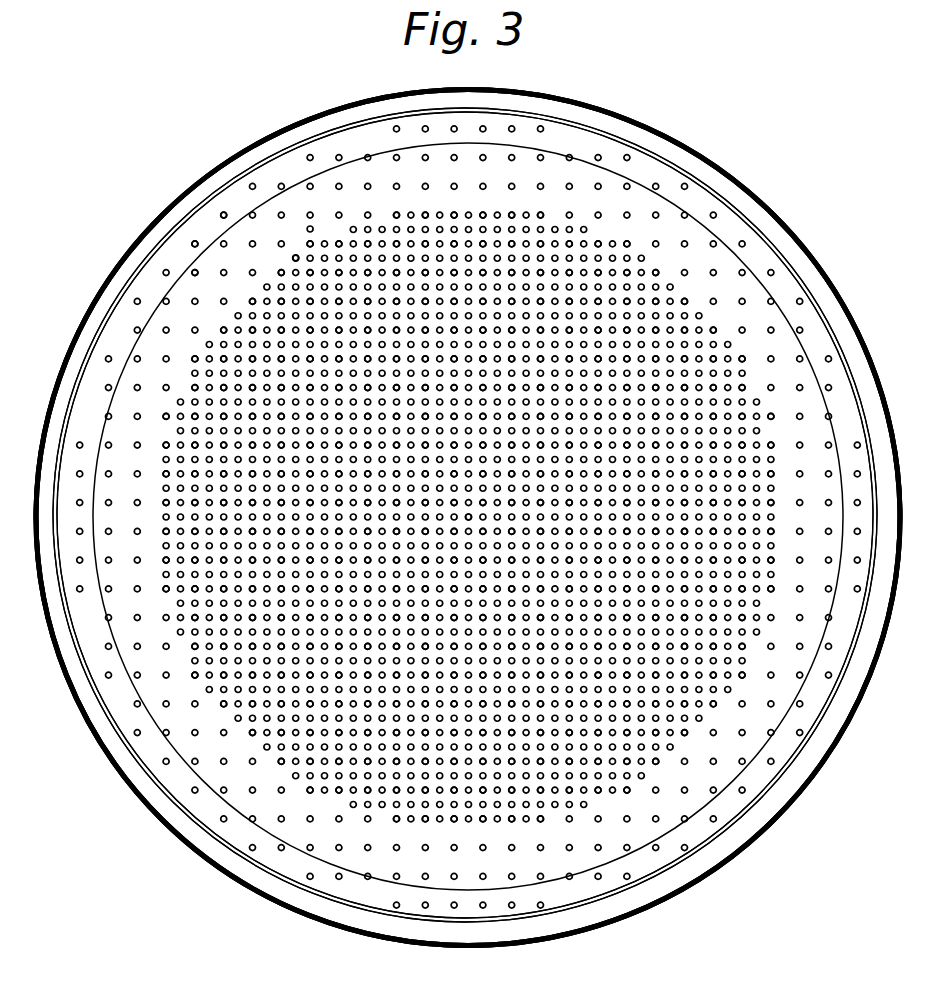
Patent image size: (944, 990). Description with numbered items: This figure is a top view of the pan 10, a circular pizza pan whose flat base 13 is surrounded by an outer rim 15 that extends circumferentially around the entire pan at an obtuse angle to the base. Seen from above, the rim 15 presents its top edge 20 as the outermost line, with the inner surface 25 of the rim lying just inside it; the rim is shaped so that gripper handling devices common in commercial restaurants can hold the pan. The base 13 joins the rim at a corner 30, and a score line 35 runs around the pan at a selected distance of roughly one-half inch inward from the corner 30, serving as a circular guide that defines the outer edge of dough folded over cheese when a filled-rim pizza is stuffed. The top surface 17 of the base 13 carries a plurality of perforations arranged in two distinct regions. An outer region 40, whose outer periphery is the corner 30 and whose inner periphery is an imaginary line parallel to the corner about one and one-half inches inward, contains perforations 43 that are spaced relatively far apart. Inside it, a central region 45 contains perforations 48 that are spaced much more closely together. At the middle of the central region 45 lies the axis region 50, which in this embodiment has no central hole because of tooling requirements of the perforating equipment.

The pan 10 is at (164, 154).
The base 13 is at (575, 143).
The outer rim 15 is at (563, 97).
The top surface 17 is at (688, 203).
The top edge 20 is at (360, 100).
The inner surface 25 is at (667, 152).
The corner 30 is at (755, 232).
The score line 35 is at (787, 320).
The outer region 40 is at (202, 287).
The perforations 43 is at (223, 213).
The central region 45 is at (300, 352).
The perforations 48 is at (295, 257).
The axis region 50 is at (467, 517).